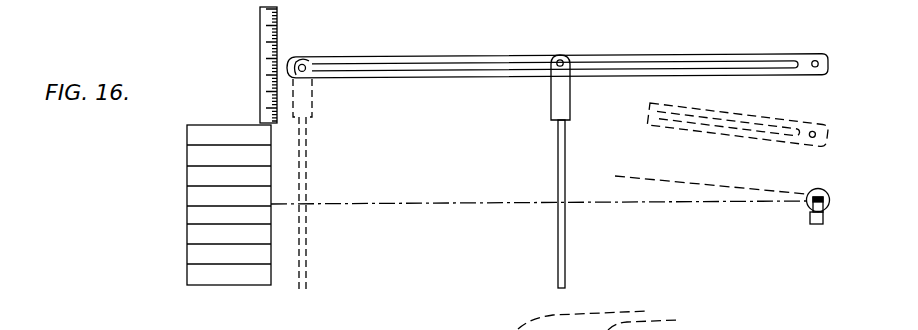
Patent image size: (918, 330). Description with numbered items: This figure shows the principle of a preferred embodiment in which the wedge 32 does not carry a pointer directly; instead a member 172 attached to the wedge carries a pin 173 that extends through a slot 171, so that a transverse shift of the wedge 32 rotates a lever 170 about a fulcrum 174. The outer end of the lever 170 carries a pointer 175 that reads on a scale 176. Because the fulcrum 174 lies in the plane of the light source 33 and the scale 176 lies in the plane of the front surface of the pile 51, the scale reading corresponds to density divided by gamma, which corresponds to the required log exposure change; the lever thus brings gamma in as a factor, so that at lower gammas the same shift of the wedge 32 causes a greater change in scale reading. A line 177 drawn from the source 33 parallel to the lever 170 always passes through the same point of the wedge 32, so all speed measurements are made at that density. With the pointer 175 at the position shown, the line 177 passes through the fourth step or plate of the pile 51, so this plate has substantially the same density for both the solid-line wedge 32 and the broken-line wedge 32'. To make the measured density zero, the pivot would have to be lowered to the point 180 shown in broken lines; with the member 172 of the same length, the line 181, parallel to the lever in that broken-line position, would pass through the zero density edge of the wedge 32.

The scale 176 is at (258, 36).
The pointer 175 is at (290, 66).
The pile 51 is at (241, 272).
The wedge in broken-line position 32' is at (326, 186).
The lever 170 is at (617, 62).
The slot 171 is at (688, 42).
The fulcrum 174 is at (815, 62).
The pin 173 is at (559, 58).
The member 172 is at (556, 106).
The wedge 32 is at (586, 204).
The lowered pivot point 180 is at (823, 118).
The line parallel to lever in broken-line position 181 is at (677, 183).
The line from the source 177 is at (690, 204).
The light source 33 is at (809, 195).